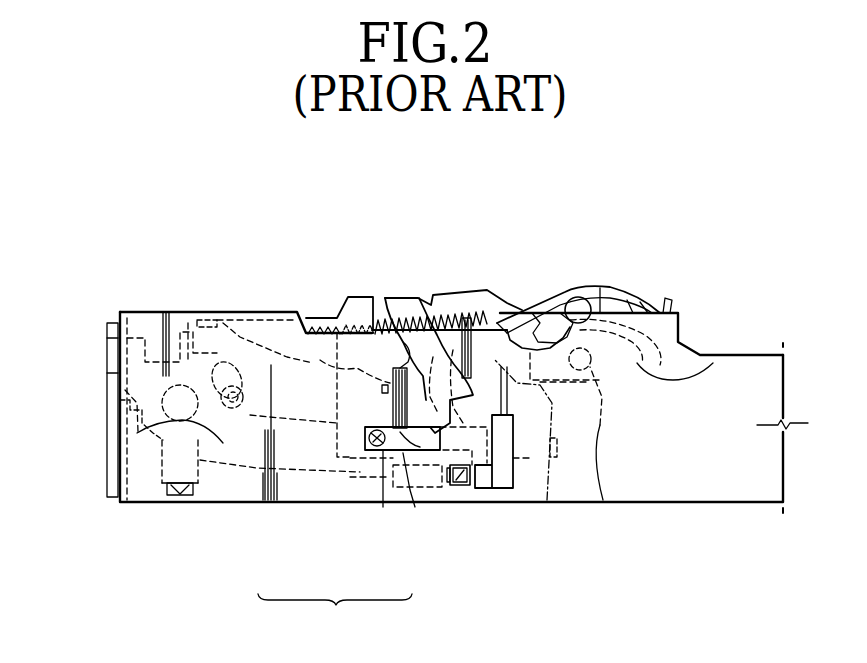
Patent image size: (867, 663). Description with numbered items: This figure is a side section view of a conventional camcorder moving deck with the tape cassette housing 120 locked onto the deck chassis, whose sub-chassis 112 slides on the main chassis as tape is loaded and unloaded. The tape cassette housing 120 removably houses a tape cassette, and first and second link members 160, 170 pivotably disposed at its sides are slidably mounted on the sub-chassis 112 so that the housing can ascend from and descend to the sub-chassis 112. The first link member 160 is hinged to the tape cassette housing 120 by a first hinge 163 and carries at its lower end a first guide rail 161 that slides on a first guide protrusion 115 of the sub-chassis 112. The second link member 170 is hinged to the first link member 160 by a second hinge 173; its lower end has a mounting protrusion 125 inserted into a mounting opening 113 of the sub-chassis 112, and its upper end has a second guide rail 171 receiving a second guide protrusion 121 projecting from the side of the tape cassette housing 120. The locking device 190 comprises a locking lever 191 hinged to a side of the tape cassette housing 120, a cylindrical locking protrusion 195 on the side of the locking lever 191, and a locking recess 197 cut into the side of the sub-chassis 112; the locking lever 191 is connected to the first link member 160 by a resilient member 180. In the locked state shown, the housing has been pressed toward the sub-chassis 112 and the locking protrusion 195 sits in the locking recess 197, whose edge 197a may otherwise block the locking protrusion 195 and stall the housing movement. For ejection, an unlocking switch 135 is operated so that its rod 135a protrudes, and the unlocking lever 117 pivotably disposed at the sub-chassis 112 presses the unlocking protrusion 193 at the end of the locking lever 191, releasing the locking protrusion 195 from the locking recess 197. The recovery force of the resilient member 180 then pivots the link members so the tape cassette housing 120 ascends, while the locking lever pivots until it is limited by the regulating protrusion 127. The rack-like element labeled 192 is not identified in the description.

The sub-chassis 112 is at (722, 488).
The mounting opening 113 is at (175, 497).
The first guide protrusion 115 is at (603, 500).
The unlocking lever 117 is at (460, 485).
The tape cassette housing 120 is at (238, 333).
The second guide protrusion 121 is at (577, 307).
The mounting protrusion 125 is at (178, 490).
The regulating protrusion 127 is at (313, 368).
The unlocking switch 135 is at (415, 507).
The rod 135a is at (435, 487).
The first link member 160 is at (520, 333).
The first guide rail 161 is at (717, 353).
The first hinge 163 is at (423, 335).
The second link member 170 is at (220, 443).
The second guide rail 171 is at (607, 307).
The second hinge 173 is at (547, 500).
The resilient member 180 is at (463, 310).
The locking device 190 is at (335, 616).
The locking lever 191 is at (347, 442).
The rack 192 is at (337, 318).
The unlocking protrusion 193 is at (498, 488).
The locking protrusion 195 is at (360, 447).
The locking recess 197 is at (383, 507).
The edge 197a is at (392, 313).